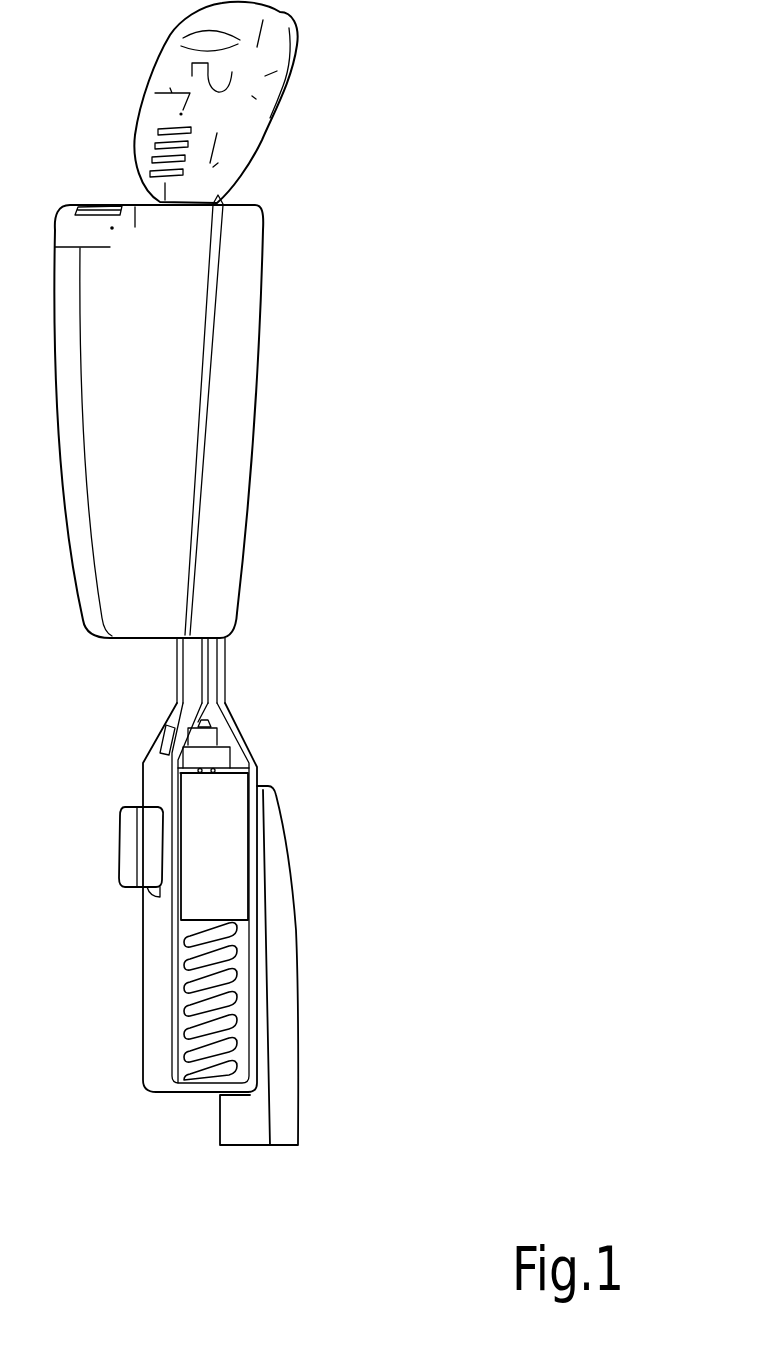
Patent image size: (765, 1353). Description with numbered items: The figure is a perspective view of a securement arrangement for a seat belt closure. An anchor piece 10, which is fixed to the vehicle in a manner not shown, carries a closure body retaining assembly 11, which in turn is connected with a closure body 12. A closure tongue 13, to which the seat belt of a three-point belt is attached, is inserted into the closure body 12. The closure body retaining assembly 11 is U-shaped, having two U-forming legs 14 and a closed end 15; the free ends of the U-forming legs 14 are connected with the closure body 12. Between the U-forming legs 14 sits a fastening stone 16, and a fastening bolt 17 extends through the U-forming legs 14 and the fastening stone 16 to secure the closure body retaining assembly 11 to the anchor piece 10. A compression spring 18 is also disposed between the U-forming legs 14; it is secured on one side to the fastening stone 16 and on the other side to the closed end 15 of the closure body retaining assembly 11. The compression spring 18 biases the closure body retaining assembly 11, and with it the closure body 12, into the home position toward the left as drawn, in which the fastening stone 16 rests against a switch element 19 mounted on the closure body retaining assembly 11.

The anchor piece 10 is at (293, 977).
The closure body retaining assembly 11 is at (258, 718).
The closure body 12 is at (218, 400).
The closure tongue 13 is at (260, 75).
The U-forming legs 14 is at (157, 987).
The closed end 15 is at (200, 1093).
The fastening stone 16 is at (217, 822).
The fastening bolt 17 is at (162, 848).
The compression spring 18 is at (180, 1032).
The switch element 19 is at (210, 757).